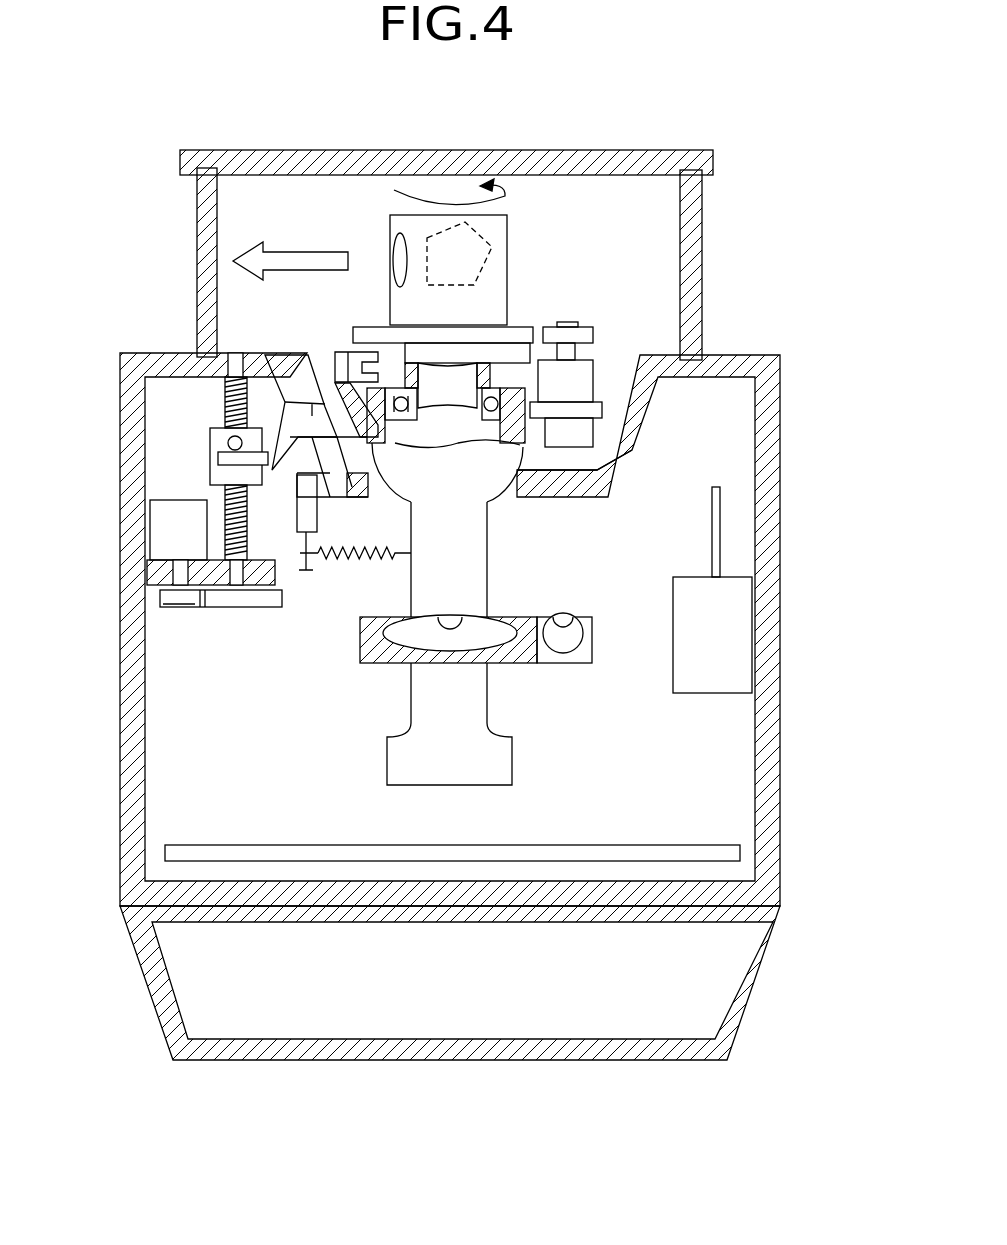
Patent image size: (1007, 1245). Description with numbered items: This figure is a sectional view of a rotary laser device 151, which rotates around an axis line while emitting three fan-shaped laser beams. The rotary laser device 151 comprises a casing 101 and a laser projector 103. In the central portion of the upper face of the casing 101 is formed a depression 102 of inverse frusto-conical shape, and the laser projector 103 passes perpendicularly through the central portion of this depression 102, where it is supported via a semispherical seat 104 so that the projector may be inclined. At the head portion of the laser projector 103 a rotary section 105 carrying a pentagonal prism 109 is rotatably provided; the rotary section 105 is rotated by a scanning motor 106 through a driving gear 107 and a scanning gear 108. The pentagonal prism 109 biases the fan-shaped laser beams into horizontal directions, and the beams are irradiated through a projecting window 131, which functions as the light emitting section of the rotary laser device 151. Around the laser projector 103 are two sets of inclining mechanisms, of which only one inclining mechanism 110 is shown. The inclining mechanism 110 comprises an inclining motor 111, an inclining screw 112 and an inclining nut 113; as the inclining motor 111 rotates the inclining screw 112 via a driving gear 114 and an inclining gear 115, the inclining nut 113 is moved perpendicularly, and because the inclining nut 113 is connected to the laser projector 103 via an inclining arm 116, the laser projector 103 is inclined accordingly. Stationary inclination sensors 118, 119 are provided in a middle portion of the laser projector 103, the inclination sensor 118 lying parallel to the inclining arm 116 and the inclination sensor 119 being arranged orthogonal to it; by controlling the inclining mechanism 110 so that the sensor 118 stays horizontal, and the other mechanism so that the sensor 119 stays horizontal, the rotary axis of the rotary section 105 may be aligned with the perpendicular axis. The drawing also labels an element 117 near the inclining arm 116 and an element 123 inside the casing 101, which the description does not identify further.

The casing 101 is at (731, 355).
The depression 102 is at (572, 470).
The laser projector 103 is at (495, 538).
The semispherical seat 104 is at (478, 474).
The rotary section 105 is at (508, 232).
The scanning motor 106 is at (581, 378).
The driving gear 107 is at (582, 327).
The scanning gear 108 is at (510, 328).
The pentagonal prism 109 is at (435, 233).
The inclining mechanism 110 is at (172, 487).
The inclining motor 111 is at (165, 539).
The inclining screw 112 is at (225, 402).
The inclining nut 113 is at (228, 457).
The driving gear 114 is at (183, 596).
The inclining gear 115 is at (247, 604).
The inclining arm 116 is at (320, 410).
The clamp 117 is at (340, 352).
The stationary inclination sensor 118 is at (475, 638).
The stationary inclination sensor 119 is at (565, 640).
The control unit 123 is at (729, 645).
The projecting window 131 is at (197, 208).
The rotary laser device 151 is at (771, 958).